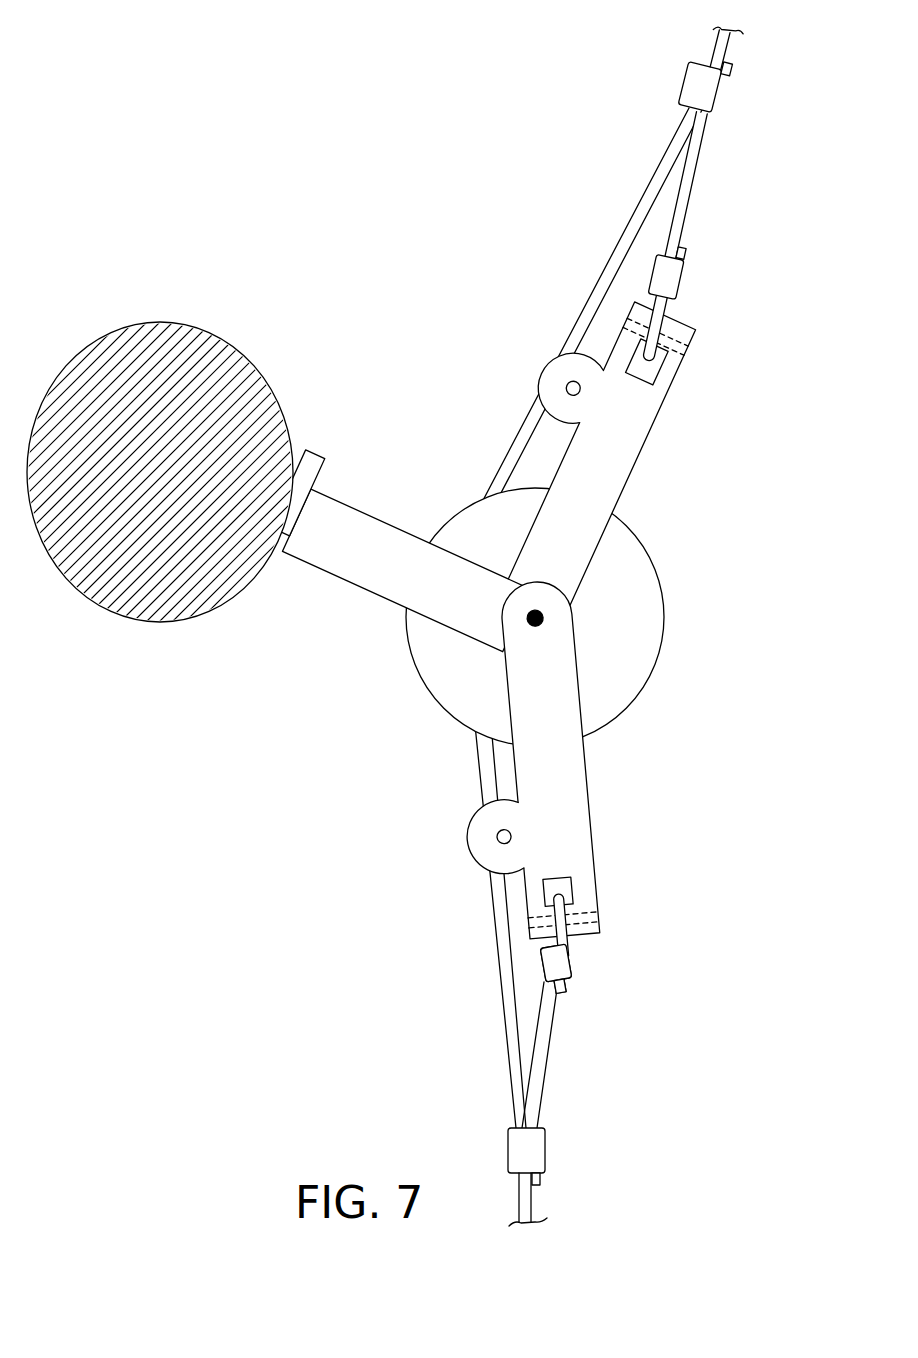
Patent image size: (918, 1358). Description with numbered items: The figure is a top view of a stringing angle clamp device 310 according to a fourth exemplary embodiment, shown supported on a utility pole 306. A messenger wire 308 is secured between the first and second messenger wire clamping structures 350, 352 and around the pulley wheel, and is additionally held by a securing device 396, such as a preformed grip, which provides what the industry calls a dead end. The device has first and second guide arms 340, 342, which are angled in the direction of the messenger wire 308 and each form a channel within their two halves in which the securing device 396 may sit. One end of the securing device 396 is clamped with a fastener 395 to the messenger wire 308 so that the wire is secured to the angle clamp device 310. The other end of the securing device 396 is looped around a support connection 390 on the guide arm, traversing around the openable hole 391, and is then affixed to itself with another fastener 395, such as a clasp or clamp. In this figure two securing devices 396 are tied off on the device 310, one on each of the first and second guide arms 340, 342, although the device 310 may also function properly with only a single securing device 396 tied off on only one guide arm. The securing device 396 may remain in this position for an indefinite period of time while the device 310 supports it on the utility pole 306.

The utility pole 306 is at (197, 372).
The messenger wire 308 is at (715, 57).
The stringing angle clamp device 310 is at (400, 175).
The first guide arm 340 is at (638, 433).
The second guide arm 342 is at (570, 828).
The first messenger wire clamping structure 350 is at (563, 365).
The second messenger wire clamping structure 352 is at (482, 850).
The support connection 390 is at (648, 307).
The openable hole 391 is at (688, 352).
The fastener 395 is at (717, 88).
The securing device 396 is at (697, 172).